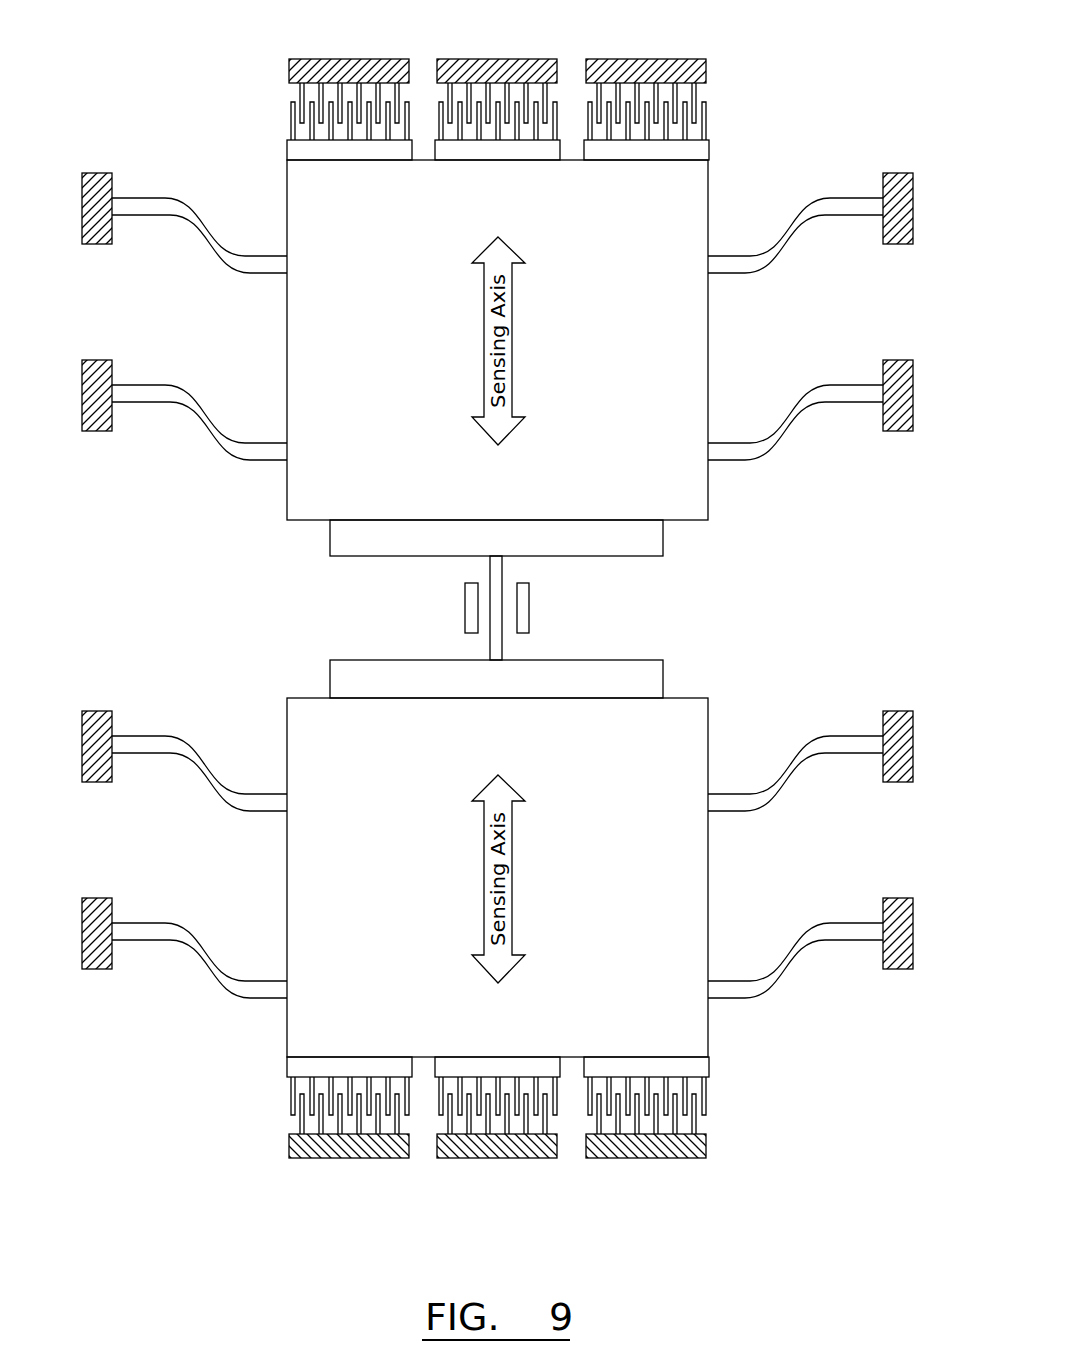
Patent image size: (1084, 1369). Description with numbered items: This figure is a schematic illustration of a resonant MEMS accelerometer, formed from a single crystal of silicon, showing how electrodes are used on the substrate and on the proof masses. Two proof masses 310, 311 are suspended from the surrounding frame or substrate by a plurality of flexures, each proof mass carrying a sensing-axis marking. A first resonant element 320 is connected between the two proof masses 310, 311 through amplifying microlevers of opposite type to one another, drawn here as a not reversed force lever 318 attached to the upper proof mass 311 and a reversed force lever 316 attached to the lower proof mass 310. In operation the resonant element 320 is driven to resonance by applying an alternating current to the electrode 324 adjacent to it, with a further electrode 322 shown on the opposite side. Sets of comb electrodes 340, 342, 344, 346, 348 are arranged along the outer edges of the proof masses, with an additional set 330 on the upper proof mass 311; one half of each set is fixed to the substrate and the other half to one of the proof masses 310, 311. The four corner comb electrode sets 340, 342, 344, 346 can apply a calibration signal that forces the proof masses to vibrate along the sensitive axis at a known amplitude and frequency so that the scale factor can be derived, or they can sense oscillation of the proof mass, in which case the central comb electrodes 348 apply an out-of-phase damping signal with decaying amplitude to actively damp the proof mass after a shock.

The proof mass 310 is at (688, 1017).
The proof mass 311 is at (688, 481).
The reversed force lever 316 is at (663, 672).
The not reversed force lever 318 is at (648, 543).
The first resonant element 320 is at (490, 646).
The stopper 322 is at (465, 600).
The electrode 324 is at (529, 598).
The sense comb electrode 330 is at (443, 107).
The comb electrodes 340 is at (290, 1093).
The comb electrodes 342 is at (706, 1093).
The comb electrodes 344 is at (290, 122).
The comb electrodes 346 is at (707, 122).
The comb electrodes 348 is at (450, 1115).